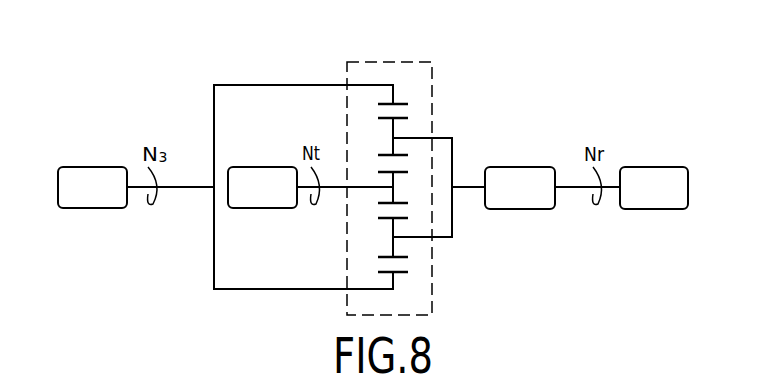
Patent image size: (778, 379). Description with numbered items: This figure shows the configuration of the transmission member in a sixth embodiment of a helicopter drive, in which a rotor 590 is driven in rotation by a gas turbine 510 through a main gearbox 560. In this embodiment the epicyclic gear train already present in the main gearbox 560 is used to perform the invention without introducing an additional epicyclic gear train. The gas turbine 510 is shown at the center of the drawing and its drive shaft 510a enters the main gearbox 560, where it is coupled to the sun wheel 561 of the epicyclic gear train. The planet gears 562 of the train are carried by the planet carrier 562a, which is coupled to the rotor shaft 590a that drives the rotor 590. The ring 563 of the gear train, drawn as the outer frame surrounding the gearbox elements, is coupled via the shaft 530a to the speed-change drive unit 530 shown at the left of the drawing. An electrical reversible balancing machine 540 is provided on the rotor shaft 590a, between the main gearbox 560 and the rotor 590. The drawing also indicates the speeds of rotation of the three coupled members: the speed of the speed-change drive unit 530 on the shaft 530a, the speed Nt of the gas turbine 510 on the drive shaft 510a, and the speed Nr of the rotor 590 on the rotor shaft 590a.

The gas turbine 510 is at (244, 198).
The drive shaft 510a is at (330, 189).
The speed-change drive unit 530 is at (74, 198).
The shaft 530a is at (178, 189).
The electrical reversible balancing machine 540 is at (502, 199).
The main gearbox 560 is at (387, 62).
The sun wheel 561 is at (395, 180).
The clutch plates 562 is at (392, 130).
The planet carrier 562a is at (452, 237).
The ring 563 is at (393, 282).
The rotor 590 is at (636, 199).
The rotor shaft 590a is at (573, 189).